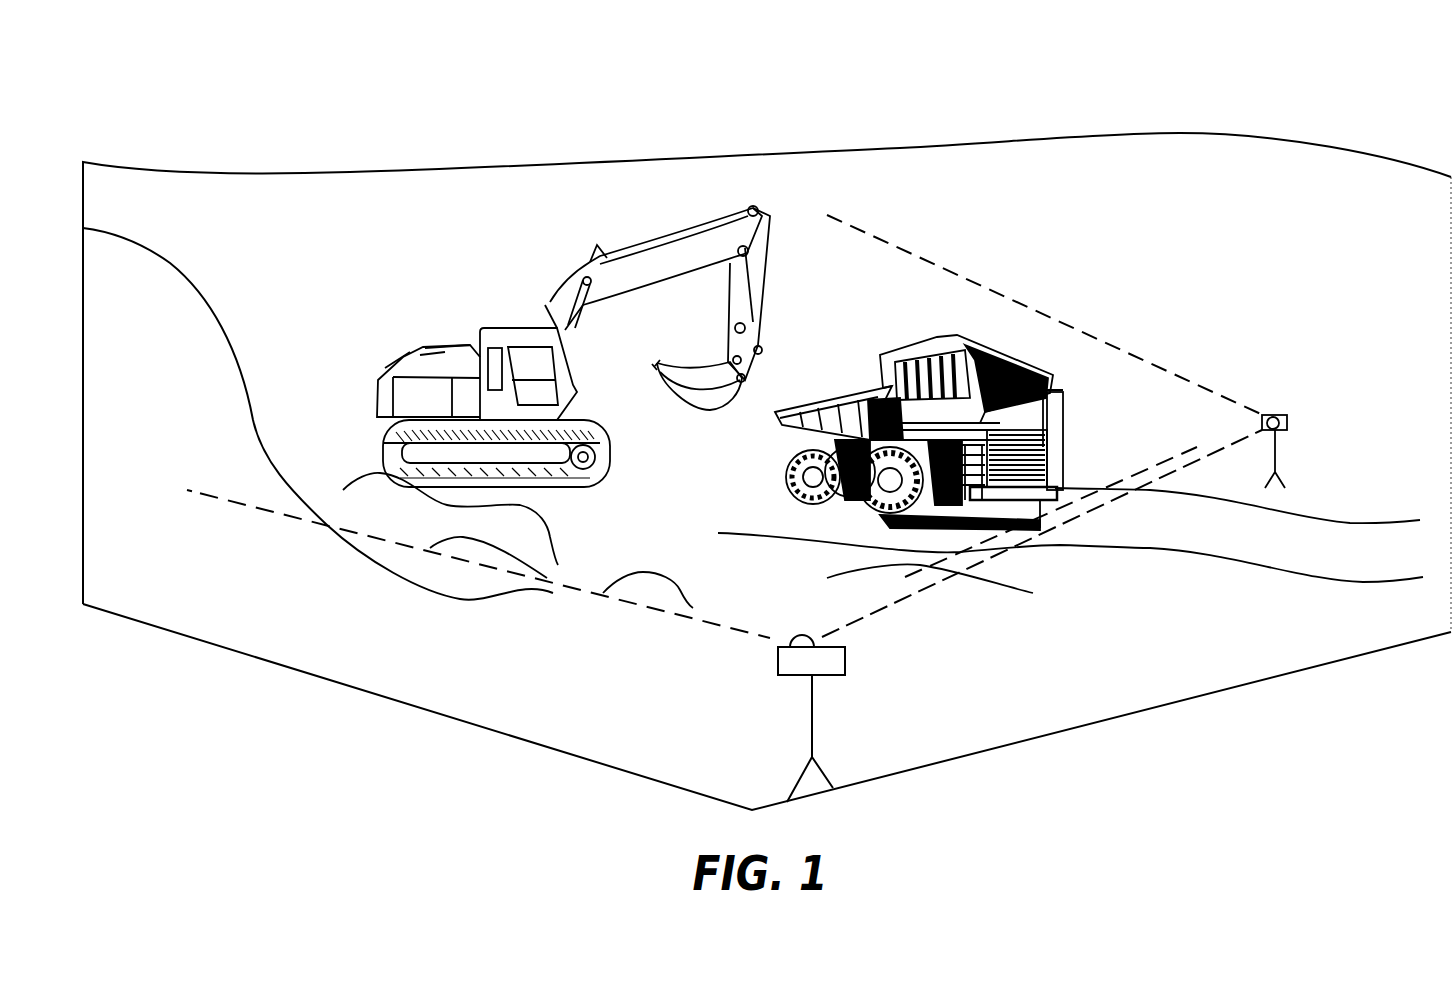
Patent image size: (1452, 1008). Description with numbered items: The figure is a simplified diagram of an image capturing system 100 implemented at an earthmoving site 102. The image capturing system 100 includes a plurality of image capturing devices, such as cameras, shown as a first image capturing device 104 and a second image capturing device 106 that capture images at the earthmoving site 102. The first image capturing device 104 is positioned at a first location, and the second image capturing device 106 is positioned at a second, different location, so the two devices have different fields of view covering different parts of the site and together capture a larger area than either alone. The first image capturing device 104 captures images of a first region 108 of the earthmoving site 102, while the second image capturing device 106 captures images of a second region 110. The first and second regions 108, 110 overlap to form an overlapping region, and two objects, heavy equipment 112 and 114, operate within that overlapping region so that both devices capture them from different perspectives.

The image capturing system 100 is at (270, 74).
The earthmoving site 102 is at (278, 665).
The first image capturing device 104 is at (846, 661).
The second image capturing device 106 is at (1289, 423).
The first region 108 is at (635, 603).
The second region 110 is at (1175, 368).
The heavy equipment 112 is at (498, 323).
The heavy equipment 114 is at (903, 350).